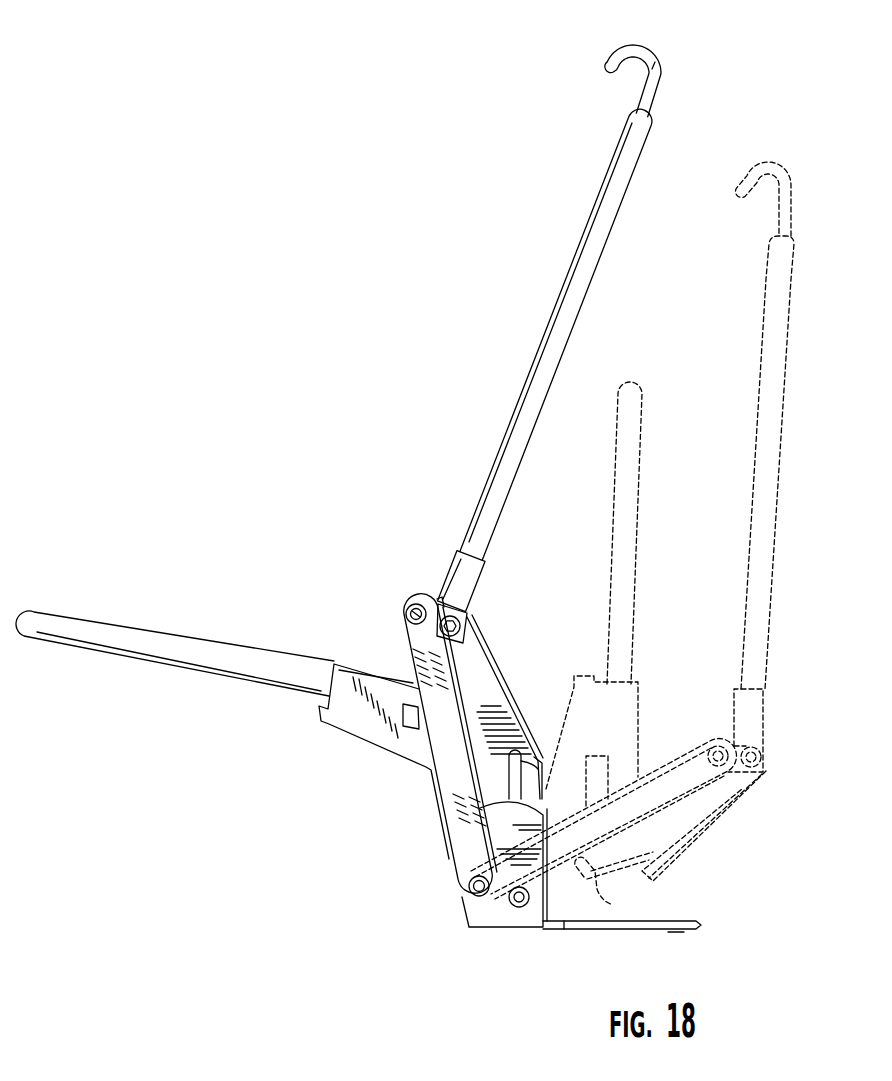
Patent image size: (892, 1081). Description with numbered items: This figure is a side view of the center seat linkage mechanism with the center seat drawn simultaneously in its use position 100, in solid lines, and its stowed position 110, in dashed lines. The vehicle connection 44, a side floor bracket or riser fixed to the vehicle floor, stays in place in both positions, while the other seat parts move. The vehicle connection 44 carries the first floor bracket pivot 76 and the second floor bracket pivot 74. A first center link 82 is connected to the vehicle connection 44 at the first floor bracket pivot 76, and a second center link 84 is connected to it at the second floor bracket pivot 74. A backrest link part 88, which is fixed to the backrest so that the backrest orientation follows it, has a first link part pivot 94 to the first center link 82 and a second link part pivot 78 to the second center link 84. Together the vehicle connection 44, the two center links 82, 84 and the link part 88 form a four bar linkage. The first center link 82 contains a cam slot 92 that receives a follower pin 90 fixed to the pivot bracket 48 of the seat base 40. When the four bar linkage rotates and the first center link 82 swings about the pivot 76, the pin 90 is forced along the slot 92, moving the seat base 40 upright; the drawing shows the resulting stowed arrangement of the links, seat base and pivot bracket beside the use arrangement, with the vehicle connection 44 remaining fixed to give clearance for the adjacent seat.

The use position 100 is at (197, 566).
The stowed position 110 is at (755, 98).
The seat base 40 is at (185, 653).
The vehicle connection 44 is at (483, 912).
The pivot bracket 48 is at (360, 717).
The second floor bracket pivot 74 is at (467, 890).
The first floor bracket pivot 76 is at (521, 908).
The second link part pivot 78 is at (403, 606).
The first center link 82 is at (467, 652).
The second center link 84 is at (420, 647).
The backrest link part 88 is at (440, 605).
The follower pin 90 is at (517, 748).
The cam slot 92 is at (538, 760).
The first link part pivot 94 is at (765, 752).